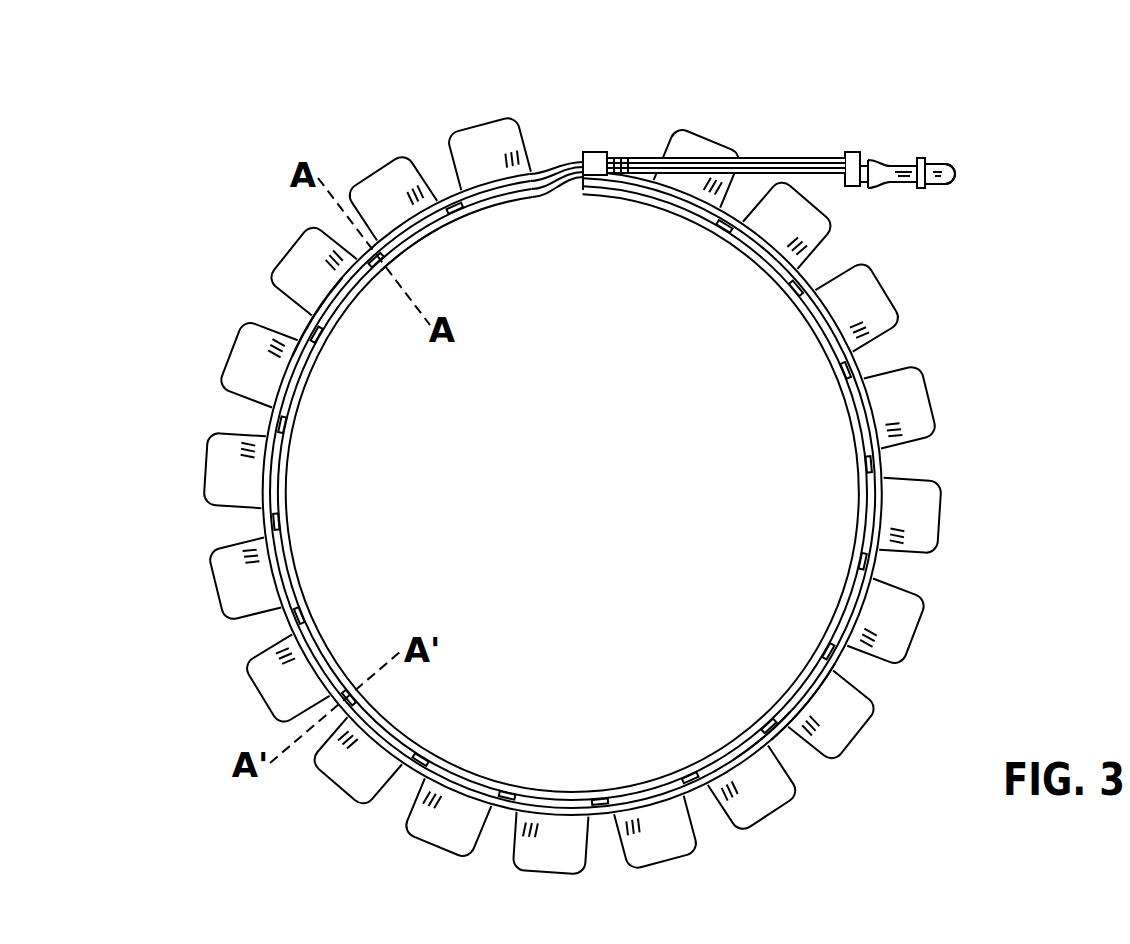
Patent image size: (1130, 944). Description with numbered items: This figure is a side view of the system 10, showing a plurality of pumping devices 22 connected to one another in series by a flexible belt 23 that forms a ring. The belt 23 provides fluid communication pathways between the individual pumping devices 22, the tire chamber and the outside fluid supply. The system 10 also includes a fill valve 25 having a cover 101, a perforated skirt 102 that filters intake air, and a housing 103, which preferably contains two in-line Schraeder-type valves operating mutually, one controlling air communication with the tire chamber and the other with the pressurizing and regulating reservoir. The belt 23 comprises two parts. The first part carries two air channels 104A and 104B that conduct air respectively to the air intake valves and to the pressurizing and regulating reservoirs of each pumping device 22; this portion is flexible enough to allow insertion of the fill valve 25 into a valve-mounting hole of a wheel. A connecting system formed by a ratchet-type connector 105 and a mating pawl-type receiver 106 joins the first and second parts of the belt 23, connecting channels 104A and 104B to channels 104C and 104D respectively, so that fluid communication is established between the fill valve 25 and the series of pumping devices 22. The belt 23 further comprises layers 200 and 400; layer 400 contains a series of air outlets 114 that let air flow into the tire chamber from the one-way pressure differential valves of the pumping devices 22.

The system 10 is at (276, 158).
The pumping devices 22 is at (396, 178).
The belt 23 is at (745, 148).
The fill valve 25 is at (958, 195).
The cover 101 is at (945, 163).
The perforated skirt 102 is at (920, 190).
The housing 103 is at (893, 165).
The air channel 104A is at (806, 174).
The air channel 104B is at (776, 159).
The channel 104C is at (305, 328).
The channel 104D is at (417, 234).
The ratchet-type connector 105 is at (622, 157).
The pawl-type receiver 106 is at (595, 152).
The air outlets 114 is at (318, 338).
The layer 200 is at (782, 730).
The layer 400 is at (797, 700).